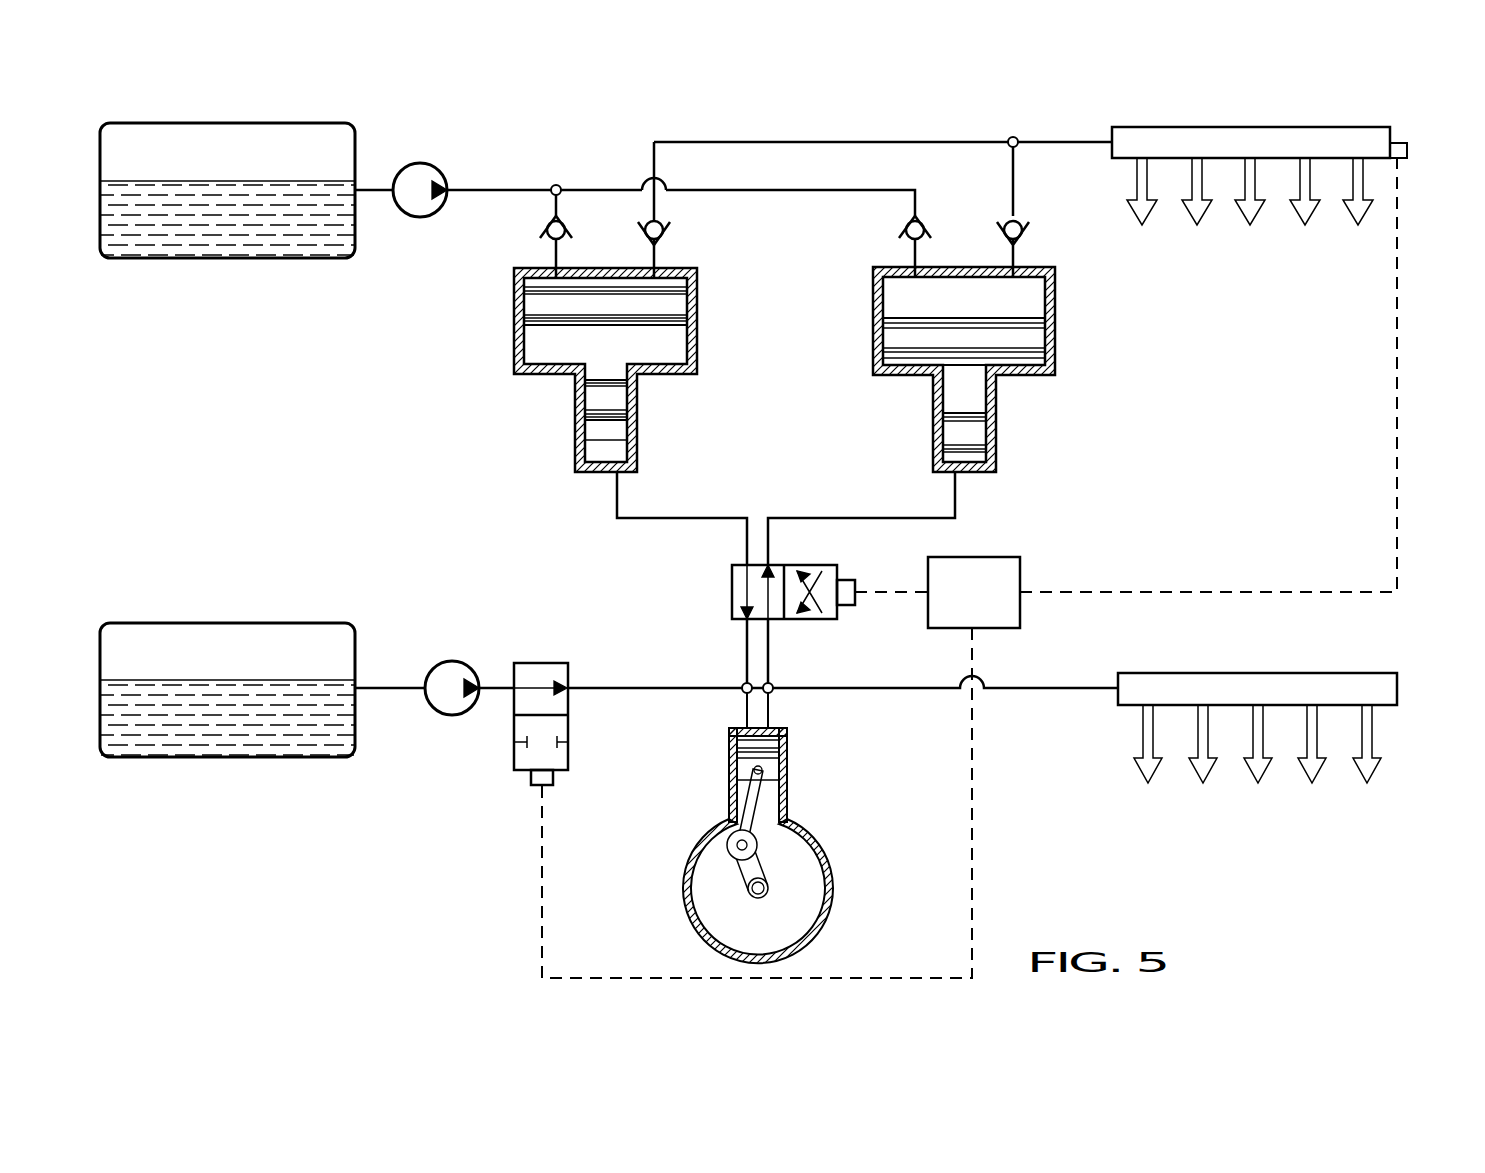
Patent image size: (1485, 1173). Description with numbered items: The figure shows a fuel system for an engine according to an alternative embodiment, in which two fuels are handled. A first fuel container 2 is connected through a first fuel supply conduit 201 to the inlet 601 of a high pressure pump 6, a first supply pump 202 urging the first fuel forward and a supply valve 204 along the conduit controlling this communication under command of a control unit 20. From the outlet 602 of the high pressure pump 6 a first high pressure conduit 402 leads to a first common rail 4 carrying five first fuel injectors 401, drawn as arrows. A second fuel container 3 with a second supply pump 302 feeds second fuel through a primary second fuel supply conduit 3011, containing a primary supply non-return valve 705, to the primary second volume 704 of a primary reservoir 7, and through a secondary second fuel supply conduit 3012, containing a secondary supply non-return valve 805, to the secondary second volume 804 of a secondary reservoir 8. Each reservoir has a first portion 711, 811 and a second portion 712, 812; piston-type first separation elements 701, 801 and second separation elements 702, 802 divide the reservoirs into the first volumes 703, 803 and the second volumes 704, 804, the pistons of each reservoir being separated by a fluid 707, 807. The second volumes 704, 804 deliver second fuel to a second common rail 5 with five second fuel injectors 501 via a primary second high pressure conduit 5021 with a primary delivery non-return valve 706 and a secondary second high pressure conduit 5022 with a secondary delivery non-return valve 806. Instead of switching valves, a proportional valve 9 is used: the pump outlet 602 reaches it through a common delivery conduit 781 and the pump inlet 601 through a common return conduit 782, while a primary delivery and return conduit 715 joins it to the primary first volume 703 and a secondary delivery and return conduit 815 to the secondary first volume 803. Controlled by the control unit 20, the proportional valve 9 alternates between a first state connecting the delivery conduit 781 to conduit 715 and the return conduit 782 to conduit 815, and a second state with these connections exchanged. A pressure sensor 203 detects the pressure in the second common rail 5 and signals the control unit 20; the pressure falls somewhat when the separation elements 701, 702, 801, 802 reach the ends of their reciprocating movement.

The first fuel container 2 is at (228, 623).
The second fuel container 3 is at (228, 258).
The first common rail 4 is at (1253, 673).
The second common rail 5 is at (1255, 127).
The high pressure pump 6 is at (835, 888).
The primary reservoir 7 is at (700, 342).
The secondary reservoir 8 is at (1058, 343).
The proportional valve 9 is at (732, 598).
The control unit 20 is at (1020, 572).
The first fuel supply conduit 201 is at (640, 690).
The first supply pump 202 is at (452, 715).
The pressure sensor 203 is at (1407, 150).
The supply valve 204 is at (514, 762).
The second supply pump 302 is at (405, 217).
The primary second fuel supply conduit 3011 is at (550, 196).
The secondary second fuel supply conduit 3012 is at (822, 190).
The first fuel injectors 401 is at (1153, 727).
The first high pressure conduit 402 is at (1040, 690).
The second fuel injectors 501 is at (1200, 178).
The primary second high pressure conduit 5021 is at (650, 160).
The secondary second high pressure conduit 5022 is at (1013, 182).
The inlet of the high pressure pump 601 is at (740, 715).
The outlet of the high pressure pump 602 is at (778, 715).
The primary first separation element 701 is at (605, 397).
The primary second separation element 702 is at (552, 302).
The primary first volume 703 is at (605, 443).
The primary second volume 704 is at (675, 284).
The primary supply non-return valve 705 is at (540, 226).
The primary delivery non-return valve 706 is at (664, 233).
The separating fluid 707 is at (555, 342).
The first portion of the primary reservoir 711 is at (636, 402).
The second portion of the primary reservoir 712 is at (523, 325).
The primary delivery and return conduit 715 is at (613, 502).
The common delivery conduit 781 is at (768, 652).
The common return conduit 782 is at (747, 633).
The secondary first separation element 801 is at (955, 430).
The secondary second separation element 802 is at (1020, 334).
The secondary first volume 803 is at (968, 458).
The secondary second volume 804 is at (1010, 297).
The secondary supply non-return valve 805 is at (906, 226).
The secondary delivery non-return valve 806 is at (1024, 238).
The separating fluid 807 is at (968, 390).
The first portion of the secondary reservoir 811 is at (982, 420).
The second portion of the secondary reservoir 812 is at (873, 320).
The secondary delivery and return conduit 815 is at (958, 495).